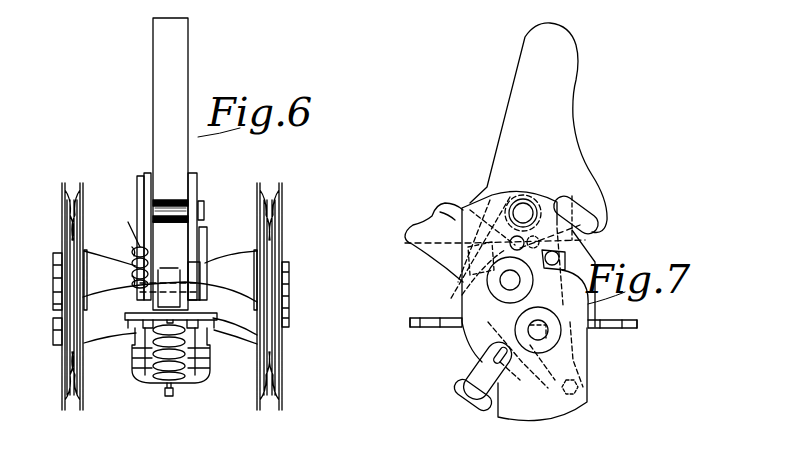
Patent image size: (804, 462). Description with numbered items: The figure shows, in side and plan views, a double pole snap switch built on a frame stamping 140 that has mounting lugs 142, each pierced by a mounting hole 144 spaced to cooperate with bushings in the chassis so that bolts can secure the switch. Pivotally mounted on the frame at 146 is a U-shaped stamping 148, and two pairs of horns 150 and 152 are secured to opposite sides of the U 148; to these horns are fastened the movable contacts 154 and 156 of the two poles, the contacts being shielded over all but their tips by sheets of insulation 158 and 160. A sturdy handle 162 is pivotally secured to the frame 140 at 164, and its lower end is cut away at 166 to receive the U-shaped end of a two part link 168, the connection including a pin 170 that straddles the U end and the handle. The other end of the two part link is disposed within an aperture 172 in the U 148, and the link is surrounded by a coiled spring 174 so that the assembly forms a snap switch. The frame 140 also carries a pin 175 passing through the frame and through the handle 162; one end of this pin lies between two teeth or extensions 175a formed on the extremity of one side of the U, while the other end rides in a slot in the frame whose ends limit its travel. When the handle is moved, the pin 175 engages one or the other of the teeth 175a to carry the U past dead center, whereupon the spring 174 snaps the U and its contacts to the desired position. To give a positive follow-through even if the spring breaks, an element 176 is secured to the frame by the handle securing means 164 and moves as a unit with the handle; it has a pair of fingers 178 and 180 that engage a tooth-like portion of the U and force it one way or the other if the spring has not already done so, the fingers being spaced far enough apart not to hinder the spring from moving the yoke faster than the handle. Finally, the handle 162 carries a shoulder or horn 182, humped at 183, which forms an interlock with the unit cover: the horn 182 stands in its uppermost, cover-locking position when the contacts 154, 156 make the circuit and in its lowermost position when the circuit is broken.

In FIG. 6, the frame stamping 140 is at (197, 181).
In FIG. 6, the mounting lugs 142 is at (217, 318).
In FIG. 7, the mounting lugs 142 is at (412, 328).
In FIG. 7, the mounting holes 144 is at (432, 319).
In FIG. 6, the pivot on the frame 146 is at (202, 300).
In FIG. 6, the U-shaped stamping 148 is at (202, 380).
In FIG. 7, the U-shaped stamping 148 is at (519, 305).
In FIG. 6, the pair of horns 150 is at (92, 267).
In FIG. 6, the pair of horns 152 is at (225, 266).
In FIG. 6, the movable contact 154 is at (72, 190).
In FIG. 6, the movable contact 156 is at (269, 190).
In FIG. 7, the movable contact 156 is at (578, 215).
In FIG. 6, the sheet of insulation 158 is at (58, 340).
In FIG. 6, the sheet of insulation 160 is at (288, 330).
In FIG. 7, the sheet of insulation 160 is at (547, 407).
In FIG. 7, the handle 162 is at (538, 128).
In FIG. 6, the handle securing means 164 is at (204, 209).
In FIG. 7, the handle securing means 164 is at (524, 210).
In FIG. 6, the cut away lower end of handle 166 is at (170, 266).
In FIG. 6, the two part link 168 is at (172, 412).
In FIG. 7, the two part link 168 is at (573, 397).
In FIG. 6, the pin 170 is at (212, 283).
In FIG. 7, the aperture 172 is at (580, 390).
In FIG. 6, the coiled spring 174 is at (168, 352).
In FIG. 7, the pin 175 is at (481, 237).
In FIG. 7, the teeth or extensions 175a is at (462, 280).
In FIG. 6, the element 176 is at (128, 222).
In FIG. 7, the element 176 is at (470, 210).
In FIG. 6, the finger 178 is at (131, 250).
In FIG. 7, the finger 178 is at (468, 262).
In FIG. 6, the finger 180 is at (131, 279).
In FIG. 7, the finger 180 is at (590, 264).
In FIG. 6, the shoulder or horn 182 is at (153, 101).
In FIG. 7, the shoulder or horn 182 is at (410, 228).
In FIG. 7, the hump 183 is at (440, 212).